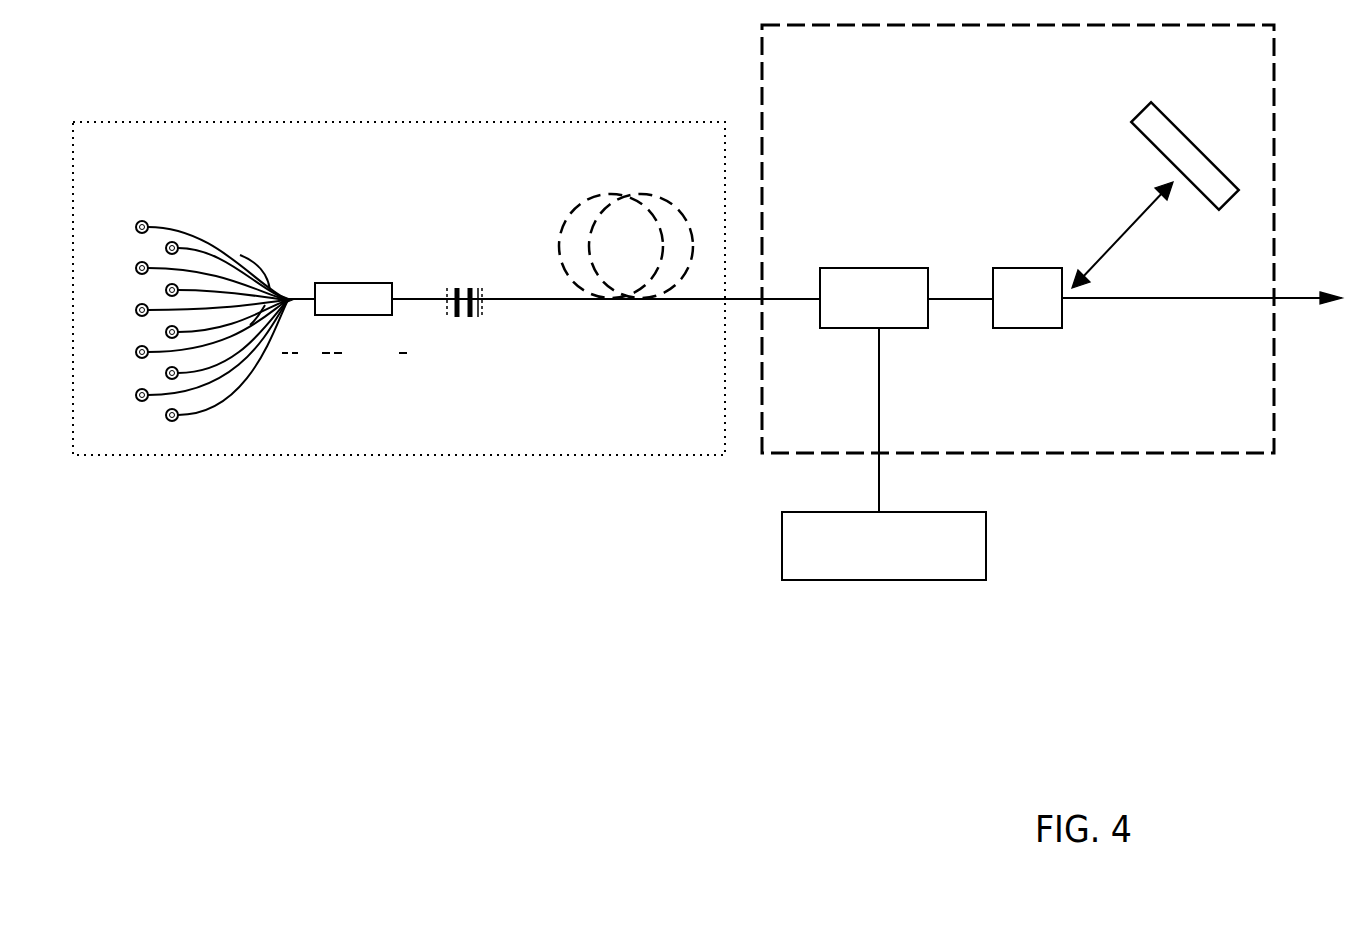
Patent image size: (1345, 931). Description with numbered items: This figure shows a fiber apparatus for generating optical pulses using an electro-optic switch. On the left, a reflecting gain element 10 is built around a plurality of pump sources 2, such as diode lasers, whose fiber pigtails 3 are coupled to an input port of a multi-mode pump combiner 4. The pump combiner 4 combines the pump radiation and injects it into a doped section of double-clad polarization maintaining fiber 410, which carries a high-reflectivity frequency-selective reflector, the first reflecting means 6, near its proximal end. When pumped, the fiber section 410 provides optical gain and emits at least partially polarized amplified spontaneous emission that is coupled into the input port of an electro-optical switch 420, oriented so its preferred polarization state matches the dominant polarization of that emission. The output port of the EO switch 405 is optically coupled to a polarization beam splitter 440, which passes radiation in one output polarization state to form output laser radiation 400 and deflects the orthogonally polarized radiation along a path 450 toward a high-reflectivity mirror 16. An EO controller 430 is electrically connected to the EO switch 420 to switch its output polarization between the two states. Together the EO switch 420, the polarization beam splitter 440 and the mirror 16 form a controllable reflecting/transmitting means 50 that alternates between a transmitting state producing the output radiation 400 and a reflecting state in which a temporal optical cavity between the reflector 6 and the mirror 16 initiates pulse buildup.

The reflecting gain element 10 is at (215, 113).
The pump sources 2 is at (139, 402).
The fiber pigtails 3 is at (187, 397).
The multi-mode pump combiner 4 is at (330, 278).
The first reflecting means 6 is at (473, 327).
The doped section of double-clad polarization maintaining fiber 410 is at (628, 308).
The controllable reflecting/transmitting means 50 is at (1128, 455).
The electro-optical switch 420 is at (838, 268).
The output port of the EO switch 405 is at (945, 308).
The polarization beam splitter 440 is at (1010, 267).
The reflected beam 450 is at (1133, 210).
The high-reflectivity mirror 16 is at (1185, 128).
The EO controller 430 is at (965, 590).
The output laser radiation 400 is at (1202, 324).